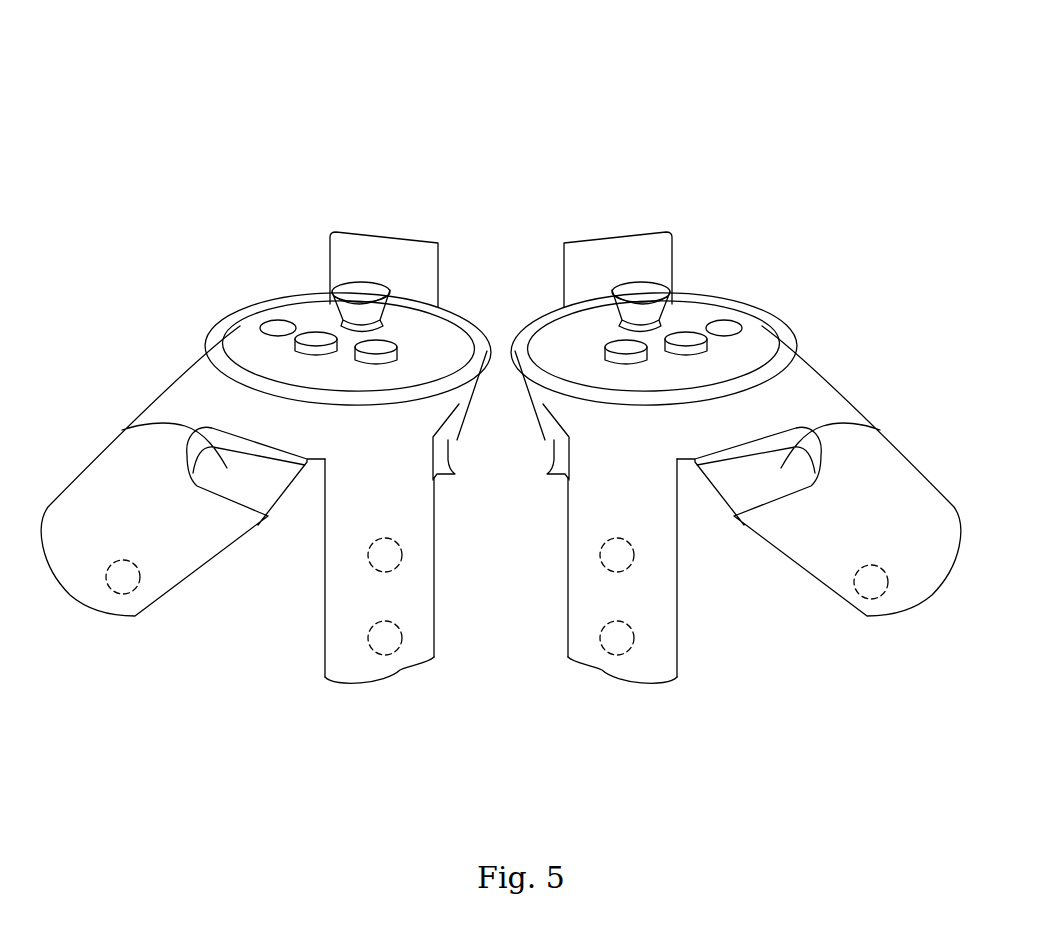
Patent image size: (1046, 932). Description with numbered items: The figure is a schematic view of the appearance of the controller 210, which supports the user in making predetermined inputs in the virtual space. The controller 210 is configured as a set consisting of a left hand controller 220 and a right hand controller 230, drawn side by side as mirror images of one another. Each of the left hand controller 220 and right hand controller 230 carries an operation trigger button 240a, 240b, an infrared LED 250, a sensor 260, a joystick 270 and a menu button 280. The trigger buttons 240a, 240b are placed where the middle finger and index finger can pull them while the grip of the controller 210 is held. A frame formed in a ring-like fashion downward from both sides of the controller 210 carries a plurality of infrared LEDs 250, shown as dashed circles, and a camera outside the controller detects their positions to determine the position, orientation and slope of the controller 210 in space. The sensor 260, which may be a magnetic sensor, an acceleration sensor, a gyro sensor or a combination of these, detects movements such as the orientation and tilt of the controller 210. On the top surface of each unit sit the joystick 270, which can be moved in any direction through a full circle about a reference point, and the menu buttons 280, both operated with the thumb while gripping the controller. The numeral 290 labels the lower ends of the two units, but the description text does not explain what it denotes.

The controller 210 is at (517, 53).
The left hand controller 220 is at (347, 195).
The right hand controller 230 is at (657, 178).
The operation trigger button 240a is at (122, 430).
The operation trigger button 240b is at (550, 441).
The infrared LED 250 is at (393, 553).
The sensor 260 is at (125, 587).
The joystick 270 is at (353, 290).
The menu button 280 is at (265, 312).
The bottom portion 290 is at (395, 670).